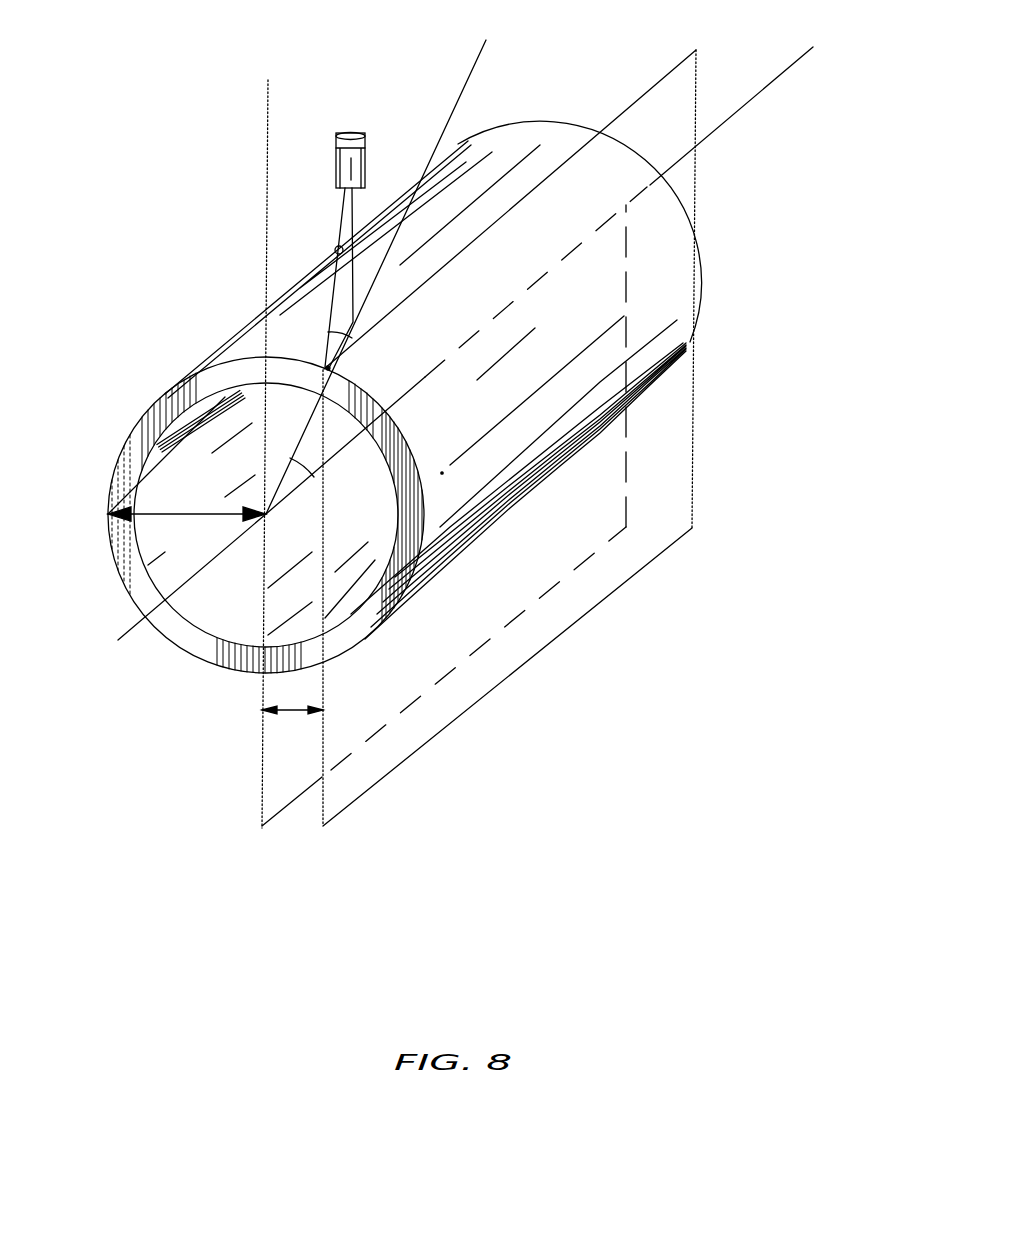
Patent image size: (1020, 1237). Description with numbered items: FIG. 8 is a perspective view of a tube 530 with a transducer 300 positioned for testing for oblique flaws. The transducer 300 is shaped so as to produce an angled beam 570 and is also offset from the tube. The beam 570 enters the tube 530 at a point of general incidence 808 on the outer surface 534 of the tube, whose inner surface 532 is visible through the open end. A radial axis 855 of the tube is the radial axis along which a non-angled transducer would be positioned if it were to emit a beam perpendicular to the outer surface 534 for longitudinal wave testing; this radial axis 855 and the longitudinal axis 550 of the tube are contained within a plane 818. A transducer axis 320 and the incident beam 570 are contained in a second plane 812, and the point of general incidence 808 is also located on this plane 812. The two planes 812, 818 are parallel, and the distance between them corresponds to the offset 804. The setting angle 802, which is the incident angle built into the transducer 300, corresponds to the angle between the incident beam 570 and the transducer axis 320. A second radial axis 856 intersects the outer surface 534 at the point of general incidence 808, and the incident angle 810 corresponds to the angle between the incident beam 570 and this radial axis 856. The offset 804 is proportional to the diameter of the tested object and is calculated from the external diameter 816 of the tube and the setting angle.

The transducer 300 is at (355, 132).
The transducer axis 320 is at (353, 322).
The tube 530 is at (236, 333).
The pipe inner surface 532 is at (158, 455).
The outer surface 534 is at (143, 423).
The longitudinal axis 550 is at (142, 620).
The incident beam 570 is at (340, 308).
The setting angle 802 is at (337, 246).
The offset 804 is at (313, 714).
The point of general incidence 808 is at (376, 277).
The incident angle 810 is at (352, 326).
The plane 812 is at (668, 105).
The external diameter 816 is at (190, 516).
The plane 818 is at (262, 792).
The radial axis 855 is at (265, 115).
The radial axis 856 is at (308, 470).